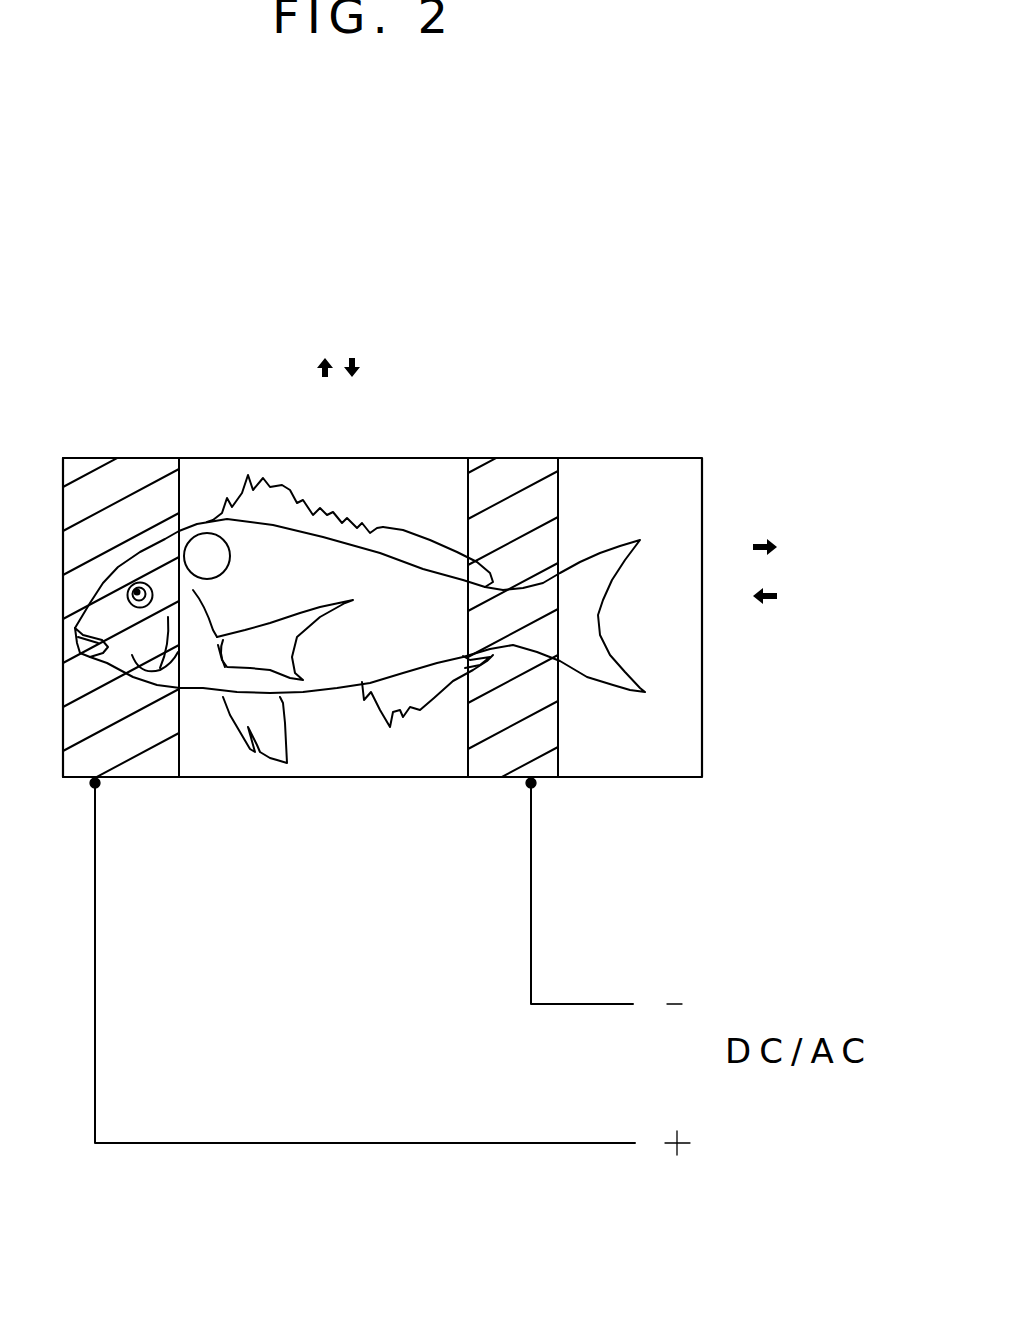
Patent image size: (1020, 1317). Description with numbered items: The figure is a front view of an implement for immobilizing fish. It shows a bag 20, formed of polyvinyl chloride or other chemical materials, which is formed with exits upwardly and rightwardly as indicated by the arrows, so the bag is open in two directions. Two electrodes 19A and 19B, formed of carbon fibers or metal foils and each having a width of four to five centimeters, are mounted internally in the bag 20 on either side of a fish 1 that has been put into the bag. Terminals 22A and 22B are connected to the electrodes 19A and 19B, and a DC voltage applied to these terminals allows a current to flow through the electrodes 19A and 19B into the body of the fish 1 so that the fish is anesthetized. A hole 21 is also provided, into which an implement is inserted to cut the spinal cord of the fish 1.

The fish 1 is at (413, 530).
The electrode 19A is at (120, 458).
The electrode 19B is at (518, 458).
The bag 20 is at (645, 458).
The hole 21 is at (205, 543).
The terminal 22A is at (97, 785).
The terminal 22B is at (533, 785).